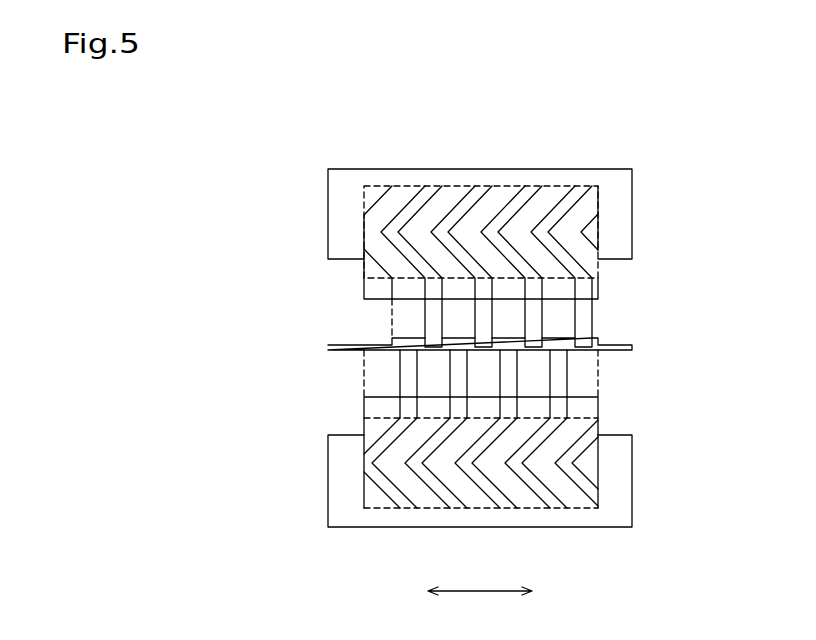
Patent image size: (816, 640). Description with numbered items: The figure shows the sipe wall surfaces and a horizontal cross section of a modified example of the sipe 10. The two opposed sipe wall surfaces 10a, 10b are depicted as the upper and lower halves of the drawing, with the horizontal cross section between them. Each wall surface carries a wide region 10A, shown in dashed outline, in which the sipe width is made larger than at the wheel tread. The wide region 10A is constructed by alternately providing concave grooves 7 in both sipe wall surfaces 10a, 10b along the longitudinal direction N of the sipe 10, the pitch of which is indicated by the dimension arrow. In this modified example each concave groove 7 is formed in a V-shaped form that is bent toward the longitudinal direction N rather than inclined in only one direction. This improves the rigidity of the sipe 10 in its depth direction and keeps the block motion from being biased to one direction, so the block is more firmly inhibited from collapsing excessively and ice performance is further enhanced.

The sipe wall surface 10a is at (410, 175).
The sipe wall surface 10b is at (412, 510).
The sipe 10 is at (345, 351).
The wide region 10A is at (532, 186).
The concave groove 7 is at (503, 186).
The longitudinal direction N is at (480, 605).